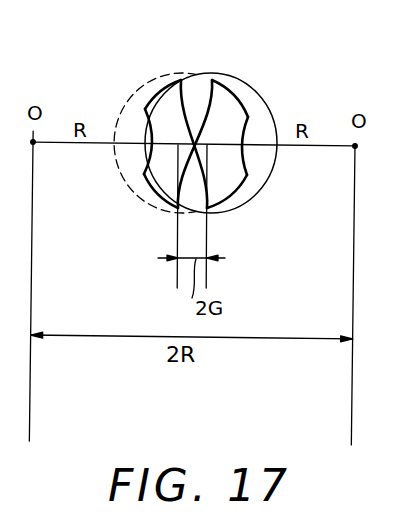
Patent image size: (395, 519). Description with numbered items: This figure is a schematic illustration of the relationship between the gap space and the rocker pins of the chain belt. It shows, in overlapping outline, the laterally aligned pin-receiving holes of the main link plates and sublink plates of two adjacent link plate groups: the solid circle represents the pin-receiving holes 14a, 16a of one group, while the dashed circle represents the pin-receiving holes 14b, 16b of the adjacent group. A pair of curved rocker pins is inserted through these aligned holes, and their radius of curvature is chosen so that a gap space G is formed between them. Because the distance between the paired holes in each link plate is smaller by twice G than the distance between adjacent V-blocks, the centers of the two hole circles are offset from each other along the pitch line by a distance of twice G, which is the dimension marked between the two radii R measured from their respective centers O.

The pin-receiving hole 14a is at (254, 118).
The pin-receiving hole 16a is at (258, 103).
The pin-receiving hole 14b is at (142, 125).
The pin-receiving hole 16b is at (137, 97).